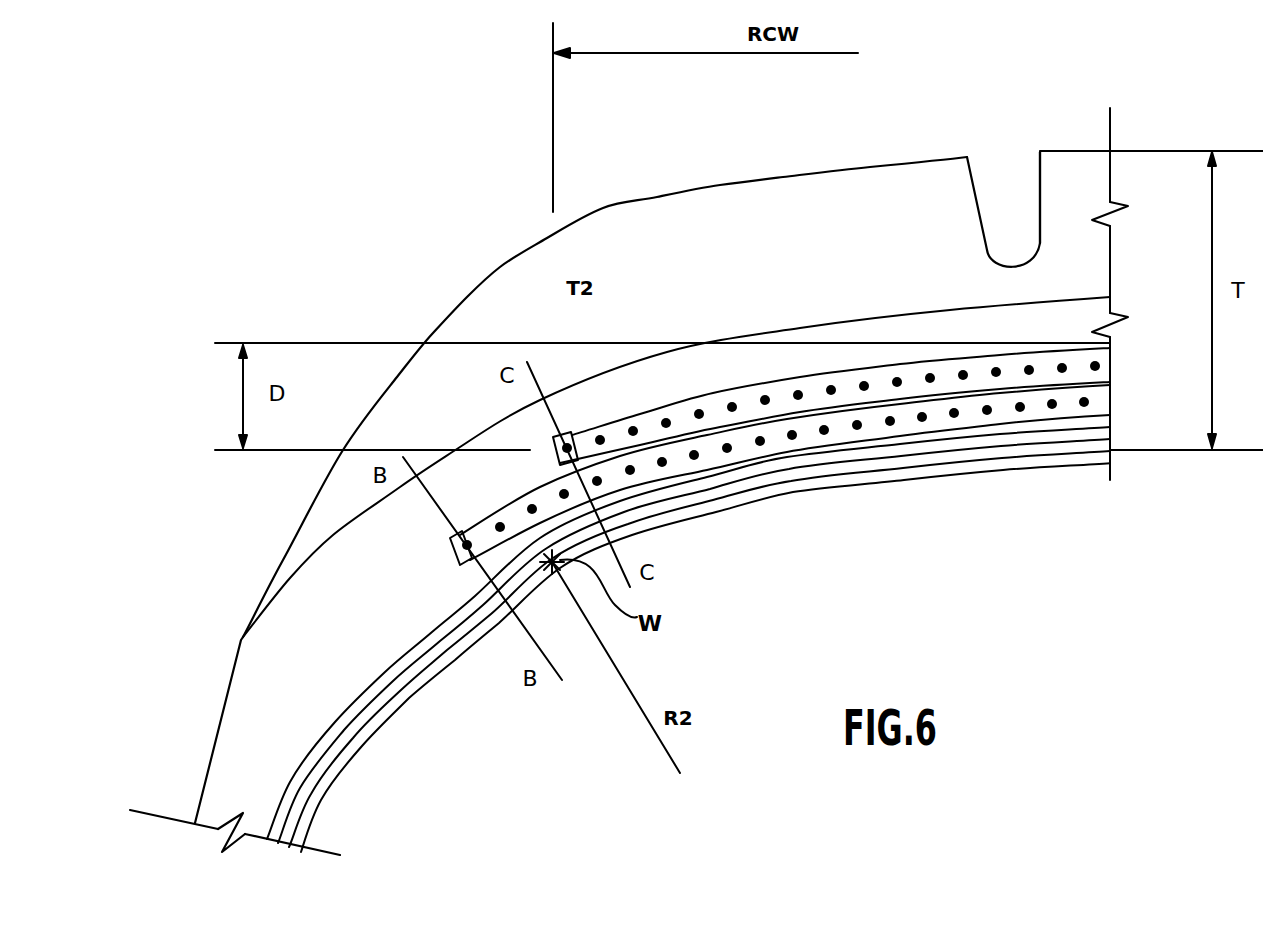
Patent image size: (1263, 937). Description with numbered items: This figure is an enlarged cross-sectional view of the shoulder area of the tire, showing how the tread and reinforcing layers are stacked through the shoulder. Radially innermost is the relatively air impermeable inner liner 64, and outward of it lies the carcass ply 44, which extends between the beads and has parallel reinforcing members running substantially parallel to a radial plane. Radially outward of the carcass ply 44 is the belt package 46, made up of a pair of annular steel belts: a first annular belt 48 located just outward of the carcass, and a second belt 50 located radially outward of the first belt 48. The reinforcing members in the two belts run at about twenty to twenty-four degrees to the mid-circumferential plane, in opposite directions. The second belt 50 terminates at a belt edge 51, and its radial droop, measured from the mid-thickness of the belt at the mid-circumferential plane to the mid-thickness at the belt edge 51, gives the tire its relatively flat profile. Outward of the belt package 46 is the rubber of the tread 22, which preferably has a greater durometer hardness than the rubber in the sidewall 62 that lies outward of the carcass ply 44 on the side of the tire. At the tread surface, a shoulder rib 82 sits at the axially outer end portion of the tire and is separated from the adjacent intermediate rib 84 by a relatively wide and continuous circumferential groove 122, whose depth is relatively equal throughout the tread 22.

The tread 22 is at (940, 153).
The carcass ply 44 is at (398, 685).
The belt package 46 is at (718, 389).
The first annular belt 48 is at (933, 412).
The second belt 50 is at (880, 383).
The belt edge 51 is at (553, 437).
The sidewall 62 is at (228, 773).
The inner liner 64 is at (1063, 447).
The shoulder rib 82 is at (783, 203).
The intermediate rib 84 is at (1087, 207).
The circumferential groove 122 is at (1013, 187).